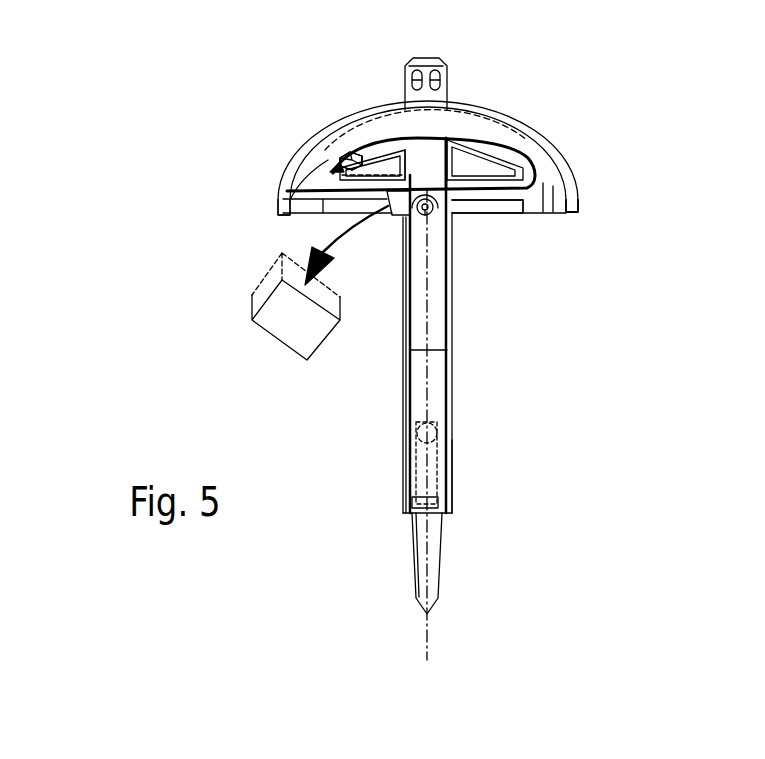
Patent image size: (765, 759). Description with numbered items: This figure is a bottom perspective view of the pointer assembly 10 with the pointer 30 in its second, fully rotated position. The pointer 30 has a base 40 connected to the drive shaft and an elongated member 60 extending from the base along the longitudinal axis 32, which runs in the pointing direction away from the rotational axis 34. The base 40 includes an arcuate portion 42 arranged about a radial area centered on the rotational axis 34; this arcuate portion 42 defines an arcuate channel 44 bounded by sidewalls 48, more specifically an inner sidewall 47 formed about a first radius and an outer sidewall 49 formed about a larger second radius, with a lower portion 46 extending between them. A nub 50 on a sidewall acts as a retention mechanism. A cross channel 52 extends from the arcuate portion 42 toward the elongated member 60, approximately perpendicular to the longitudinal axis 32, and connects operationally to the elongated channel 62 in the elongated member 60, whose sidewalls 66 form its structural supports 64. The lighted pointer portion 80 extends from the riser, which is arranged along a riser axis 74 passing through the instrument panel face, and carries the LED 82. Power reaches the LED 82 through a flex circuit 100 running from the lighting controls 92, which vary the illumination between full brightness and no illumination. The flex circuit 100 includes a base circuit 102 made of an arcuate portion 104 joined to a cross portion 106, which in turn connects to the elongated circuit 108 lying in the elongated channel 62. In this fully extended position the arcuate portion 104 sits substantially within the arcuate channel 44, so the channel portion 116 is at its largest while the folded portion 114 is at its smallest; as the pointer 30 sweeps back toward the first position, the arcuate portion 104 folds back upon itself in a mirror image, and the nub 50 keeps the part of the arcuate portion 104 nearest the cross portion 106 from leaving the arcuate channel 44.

The pointer assembly 10 is at (115, 388).
The pointer 30 is at (466, 381).
The longitudinal axis 32 is at (508, 425).
The rotational axis 34 is at (508, 425).
The riser axis 74 is at (427, 642).
The base 40 is at (556, 126).
The arcuate portion 42 is at (468, 115).
The arcuate channel 44 is at (548, 182).
The lower portion 46 is at (543, 182).
The inner sidewall 47 is at (360, 153).
The sidewalls 48 is at (340, 155).
The outer sidewall 49 is at (283, 210).
The nub 50 is at (352, 163).
The cross channel 52 is at (350, 192).
The elongated member 60 is at (422, 300).
The elongated channel 62 is at (437, 325).
The structural supports 64 is at (403, 393).
The sidewalls 66 is at (452, 445).
The lighted pointer portion 80 is at (432, 547).
The LED 82 is at (437, 427).
The lighting controls 92 is at (300, 348).
The flex circuit 100 is at (328, 160).
The base circuit 102 is at (440, 132).
The arcuate portion 104 is at (487, 140).
The cross portion 106 is at (318, 190).
The elongated circuit 108 is at (410, 350).
The folded portion 114 is at (447, 186).
The channel portion 116 is at (400, 133).